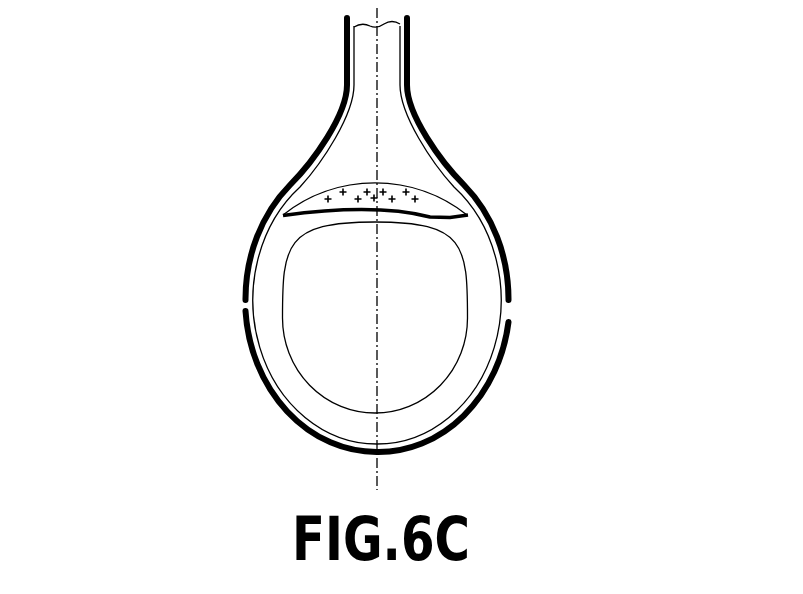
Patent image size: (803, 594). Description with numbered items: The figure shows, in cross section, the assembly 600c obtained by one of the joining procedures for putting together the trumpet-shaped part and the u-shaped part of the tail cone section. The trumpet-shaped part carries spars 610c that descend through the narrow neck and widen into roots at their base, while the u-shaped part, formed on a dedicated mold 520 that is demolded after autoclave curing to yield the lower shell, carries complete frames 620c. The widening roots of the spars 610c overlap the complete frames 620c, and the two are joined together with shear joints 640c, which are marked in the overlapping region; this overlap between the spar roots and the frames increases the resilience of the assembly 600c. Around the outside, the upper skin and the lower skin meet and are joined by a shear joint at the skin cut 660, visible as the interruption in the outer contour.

The assembly 600c is at (138, 144).
The spars 610c is at (294, 192).
The complete frames 620c is at (262, 276).
The shear joints 640c is at (425, 195).
The dedicated mold 520 is at (483, 265).
The skin cut 660 is at (518, 307).